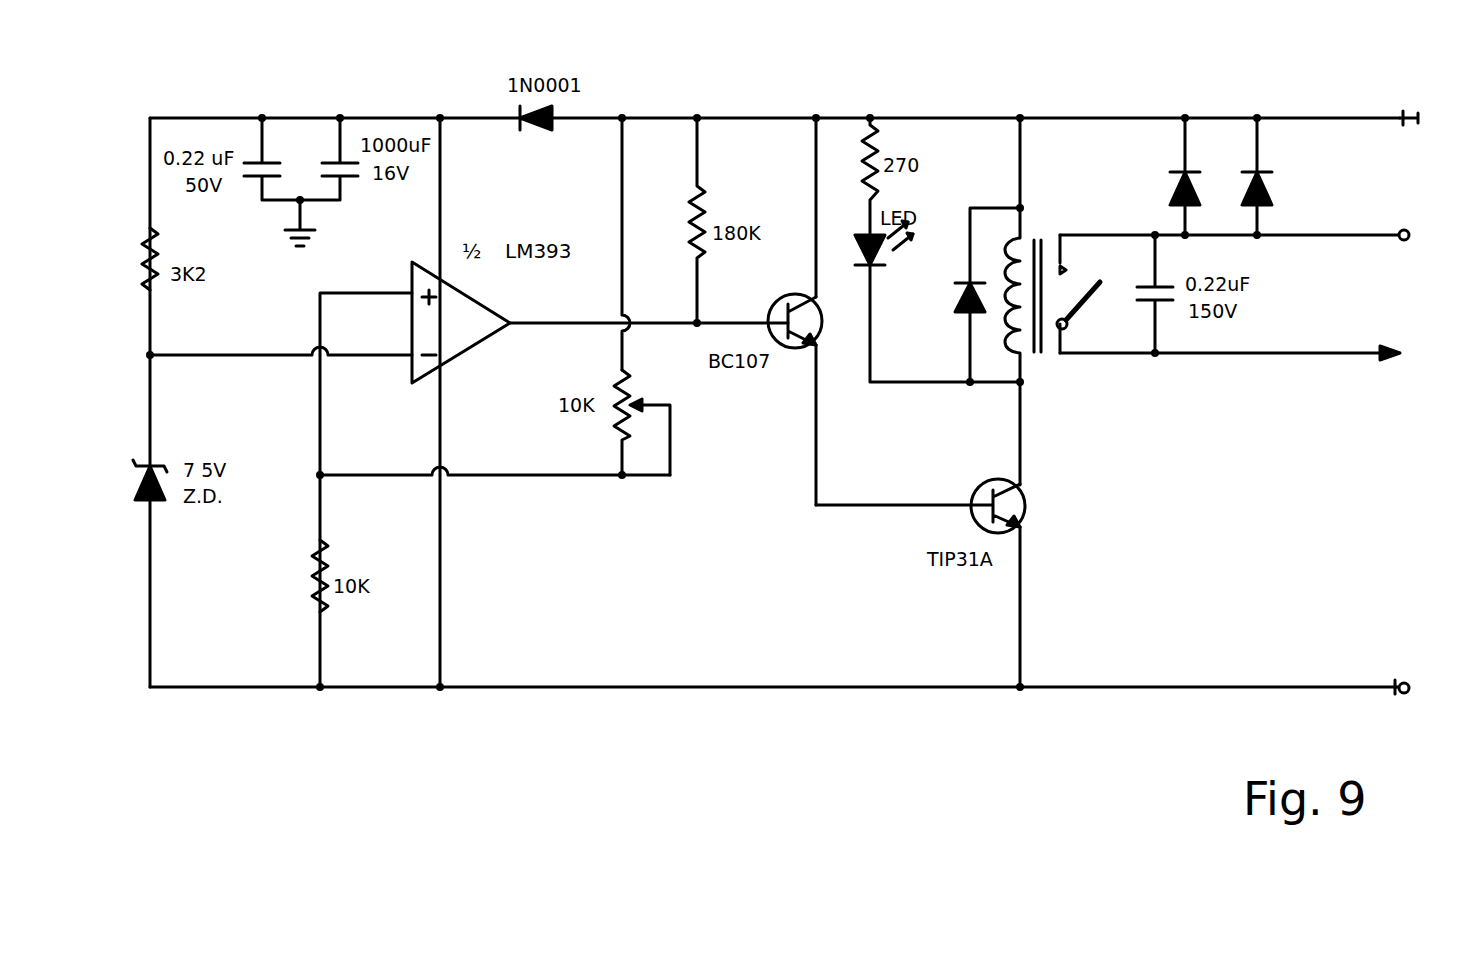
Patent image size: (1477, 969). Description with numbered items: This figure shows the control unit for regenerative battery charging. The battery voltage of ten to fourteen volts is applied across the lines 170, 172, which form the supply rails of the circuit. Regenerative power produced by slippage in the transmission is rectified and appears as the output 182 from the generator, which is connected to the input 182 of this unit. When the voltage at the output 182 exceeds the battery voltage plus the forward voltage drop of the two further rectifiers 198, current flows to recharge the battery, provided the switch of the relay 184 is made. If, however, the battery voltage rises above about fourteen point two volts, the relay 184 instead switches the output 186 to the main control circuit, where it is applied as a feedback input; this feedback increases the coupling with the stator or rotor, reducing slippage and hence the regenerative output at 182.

The line 170 is at (1355, 118).
The line 172 is at (1354, 687).
The output from the generator 182 is at (1371, 235).
The relay 184 is at (1090, 303).
The output 186 is at (1368, 355).
The further rectifiers 198 is at (1249, 170).